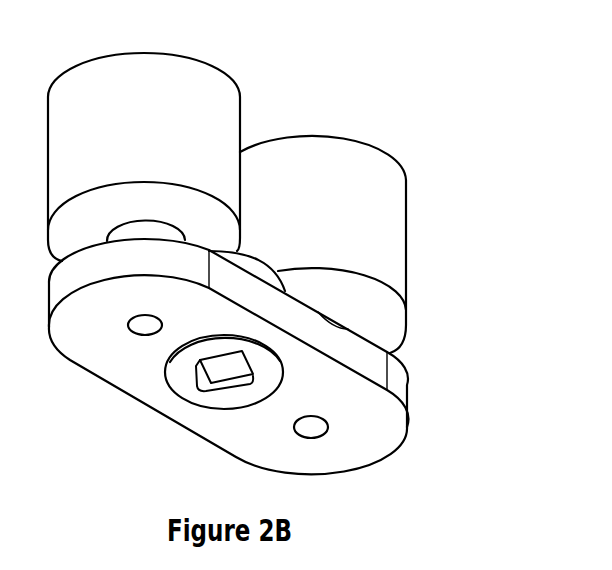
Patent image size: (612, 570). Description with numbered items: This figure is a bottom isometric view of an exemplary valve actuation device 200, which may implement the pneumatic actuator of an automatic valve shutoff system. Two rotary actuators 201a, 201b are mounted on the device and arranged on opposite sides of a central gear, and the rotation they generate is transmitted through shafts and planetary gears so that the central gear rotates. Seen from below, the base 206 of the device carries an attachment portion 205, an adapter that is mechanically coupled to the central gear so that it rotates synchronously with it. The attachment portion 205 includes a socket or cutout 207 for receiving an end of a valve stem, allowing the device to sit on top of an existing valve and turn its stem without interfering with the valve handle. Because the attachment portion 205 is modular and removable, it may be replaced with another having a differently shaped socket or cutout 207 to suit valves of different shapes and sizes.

The device 200 is at (509, 53).
The rotary actuator 201a is at (58, 81).
The rotary actuator 201b is at (373, 151).
The attachment portion 205 is at (180, 377).
The base 206 is at (398, 430).
The socket or cutout 207 is at (195, 380).